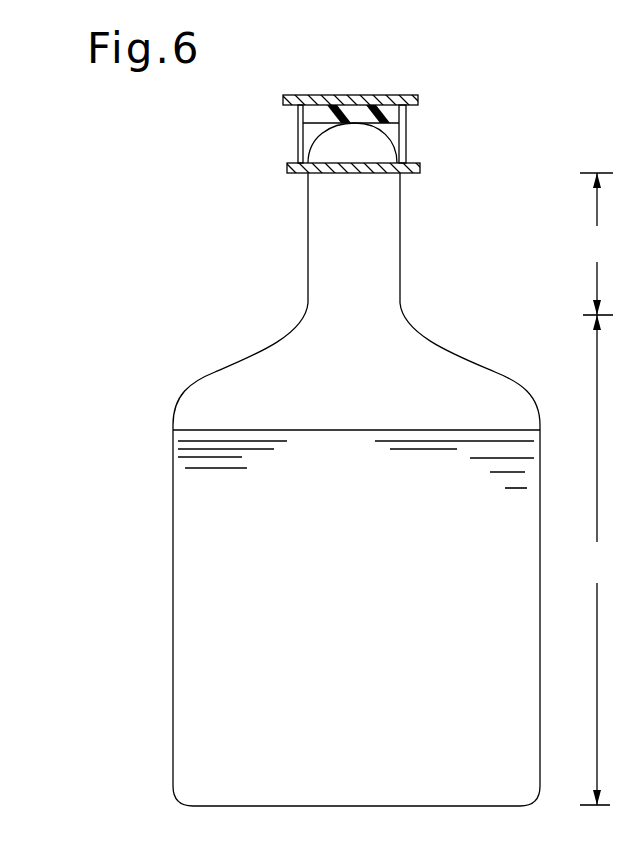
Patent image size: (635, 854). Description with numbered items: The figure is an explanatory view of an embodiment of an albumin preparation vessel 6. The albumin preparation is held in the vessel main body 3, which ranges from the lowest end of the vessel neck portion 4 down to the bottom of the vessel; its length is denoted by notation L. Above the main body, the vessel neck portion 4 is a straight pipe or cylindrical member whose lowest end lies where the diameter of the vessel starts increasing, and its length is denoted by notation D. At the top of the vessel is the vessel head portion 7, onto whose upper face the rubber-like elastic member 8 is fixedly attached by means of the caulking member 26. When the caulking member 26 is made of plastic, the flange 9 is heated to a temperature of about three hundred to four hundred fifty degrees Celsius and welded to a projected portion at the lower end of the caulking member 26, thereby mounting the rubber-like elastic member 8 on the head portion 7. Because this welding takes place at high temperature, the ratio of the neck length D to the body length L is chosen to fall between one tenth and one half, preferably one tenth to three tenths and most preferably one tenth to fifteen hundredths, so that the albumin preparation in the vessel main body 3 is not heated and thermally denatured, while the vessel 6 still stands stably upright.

The vessel main body 3 is at (340, 566).
The vessel neck portion 4 is at (359, 244).
The vessel 6 is at (311, 489).
The vessel head portion 7 is at (393, 120).
The rubber-like elastic member 8 is at (340, 96).
The flange 9 is at (292, 176).
The caulking member 26 is at (298, 130).
The length of vessel neck portion D is at (596, 244).
The length of body portion L is at (595, 560).